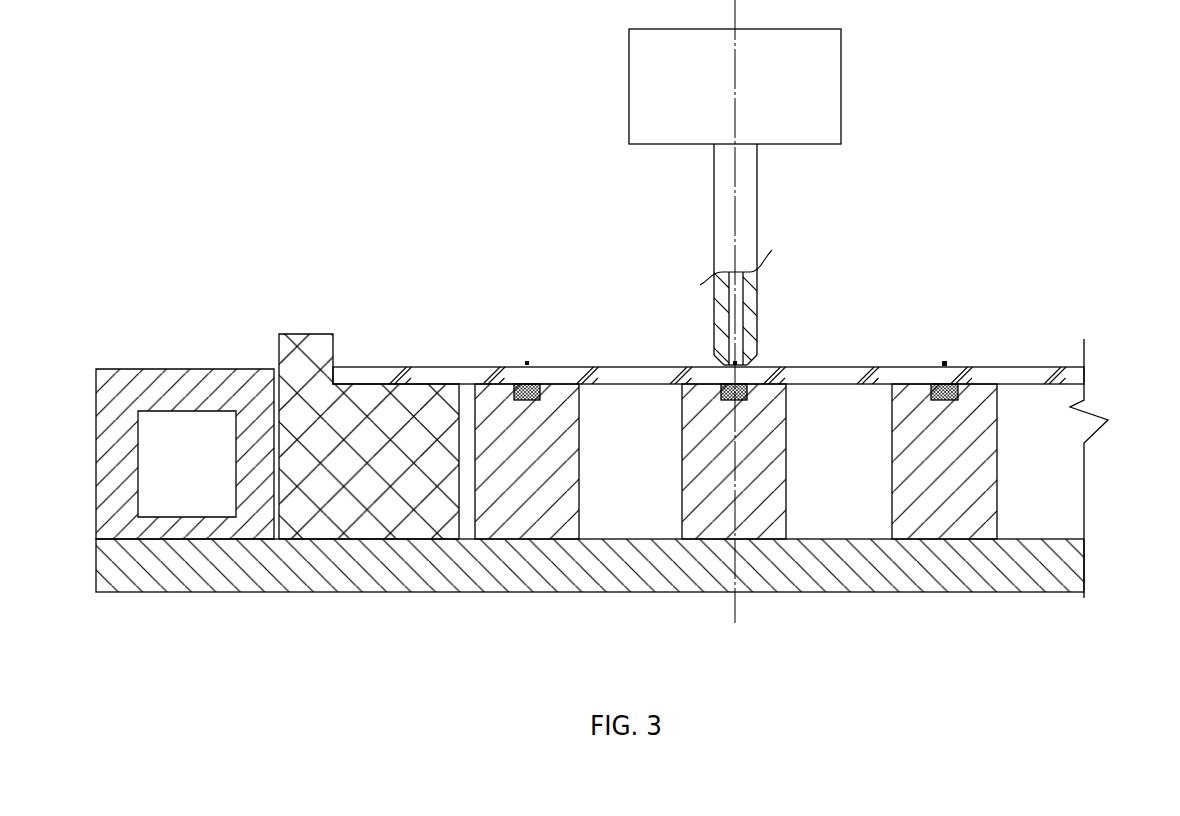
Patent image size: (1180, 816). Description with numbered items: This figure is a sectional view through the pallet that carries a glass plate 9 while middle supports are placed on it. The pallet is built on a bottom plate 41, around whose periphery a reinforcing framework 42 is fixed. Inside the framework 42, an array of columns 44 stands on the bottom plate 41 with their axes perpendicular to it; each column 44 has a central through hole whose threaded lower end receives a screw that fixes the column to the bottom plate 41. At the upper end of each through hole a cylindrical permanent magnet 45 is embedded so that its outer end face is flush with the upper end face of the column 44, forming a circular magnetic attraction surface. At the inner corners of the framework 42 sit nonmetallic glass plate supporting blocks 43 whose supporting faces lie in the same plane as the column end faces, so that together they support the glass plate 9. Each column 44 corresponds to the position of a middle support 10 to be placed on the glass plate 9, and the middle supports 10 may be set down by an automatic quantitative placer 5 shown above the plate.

The automatic quantitative placer 5 is at (813, 90).
The glass plate 9 is at (825, 375).
The middle support 10 is at (944, 364).
The bottom plate 41 is at (395, 573).
The framework 42 is at (158, 378).
The glass plate supporting block 43 is at (310, 368).
The column 44 is at (971, 475).
The permanent magnet 45 is at (525, 385).